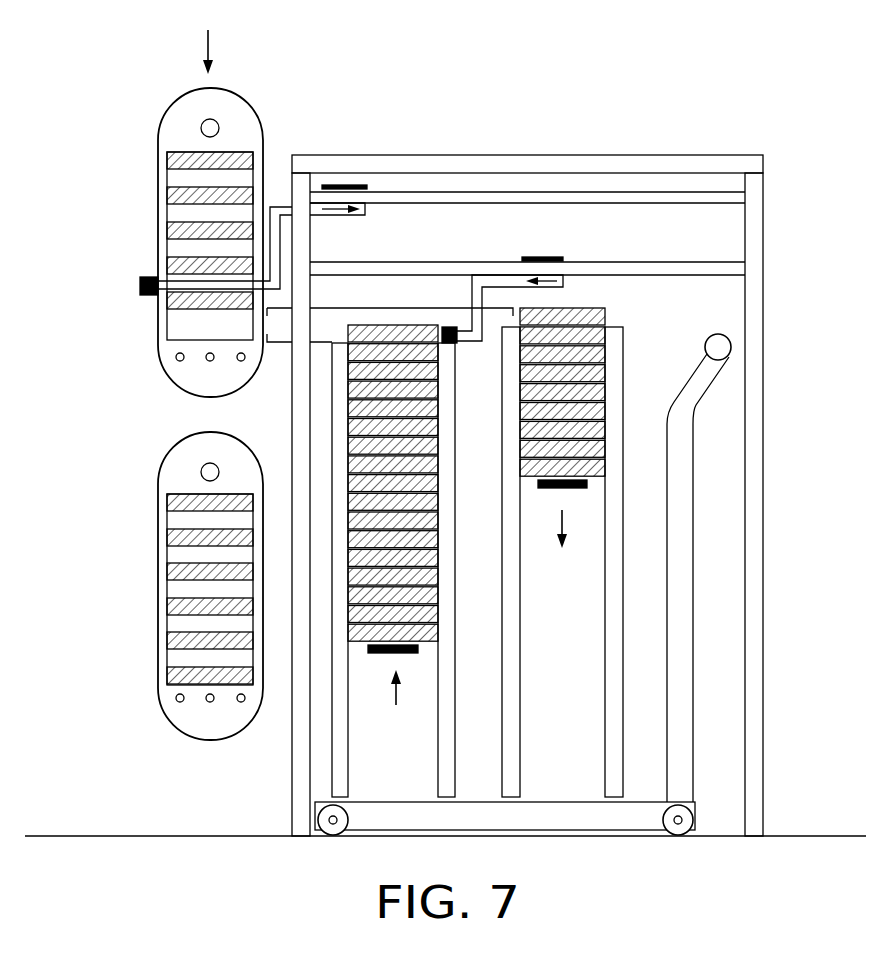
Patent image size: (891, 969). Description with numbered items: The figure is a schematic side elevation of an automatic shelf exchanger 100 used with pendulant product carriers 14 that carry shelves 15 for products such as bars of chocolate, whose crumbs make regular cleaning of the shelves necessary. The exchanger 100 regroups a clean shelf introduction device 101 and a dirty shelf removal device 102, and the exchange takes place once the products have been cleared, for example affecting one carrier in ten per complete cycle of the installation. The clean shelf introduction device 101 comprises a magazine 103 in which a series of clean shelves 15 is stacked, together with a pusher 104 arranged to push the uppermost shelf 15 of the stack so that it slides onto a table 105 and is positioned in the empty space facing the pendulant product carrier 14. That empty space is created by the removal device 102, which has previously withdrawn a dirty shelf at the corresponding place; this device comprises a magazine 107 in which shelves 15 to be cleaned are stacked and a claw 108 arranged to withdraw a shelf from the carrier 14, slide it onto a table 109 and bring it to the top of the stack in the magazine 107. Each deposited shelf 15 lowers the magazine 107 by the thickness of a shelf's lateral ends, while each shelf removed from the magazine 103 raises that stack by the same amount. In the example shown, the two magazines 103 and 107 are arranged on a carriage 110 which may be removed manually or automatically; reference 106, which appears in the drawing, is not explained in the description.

The pendulant product carrier 14 is at (155, 185).
The shelf 15 is at (595, 390).
The exchanger 100 is at (784, 261).
The clean shelf introduction device 101 is at (464, 496).
The dirty shelf removal device 102 is at (646, 300).
The magazine 103 is at (362, 742).
The pusher 104 is at (450, 327).
The table 105 is at (277, 346).
The cassette interior 106 is at (176, 330).
The magazine 107 is at (597, 487).
The claw 108 is at (140, 287).
The table 109 is at (367, 307).
The carriage 110 is at (683, 625).